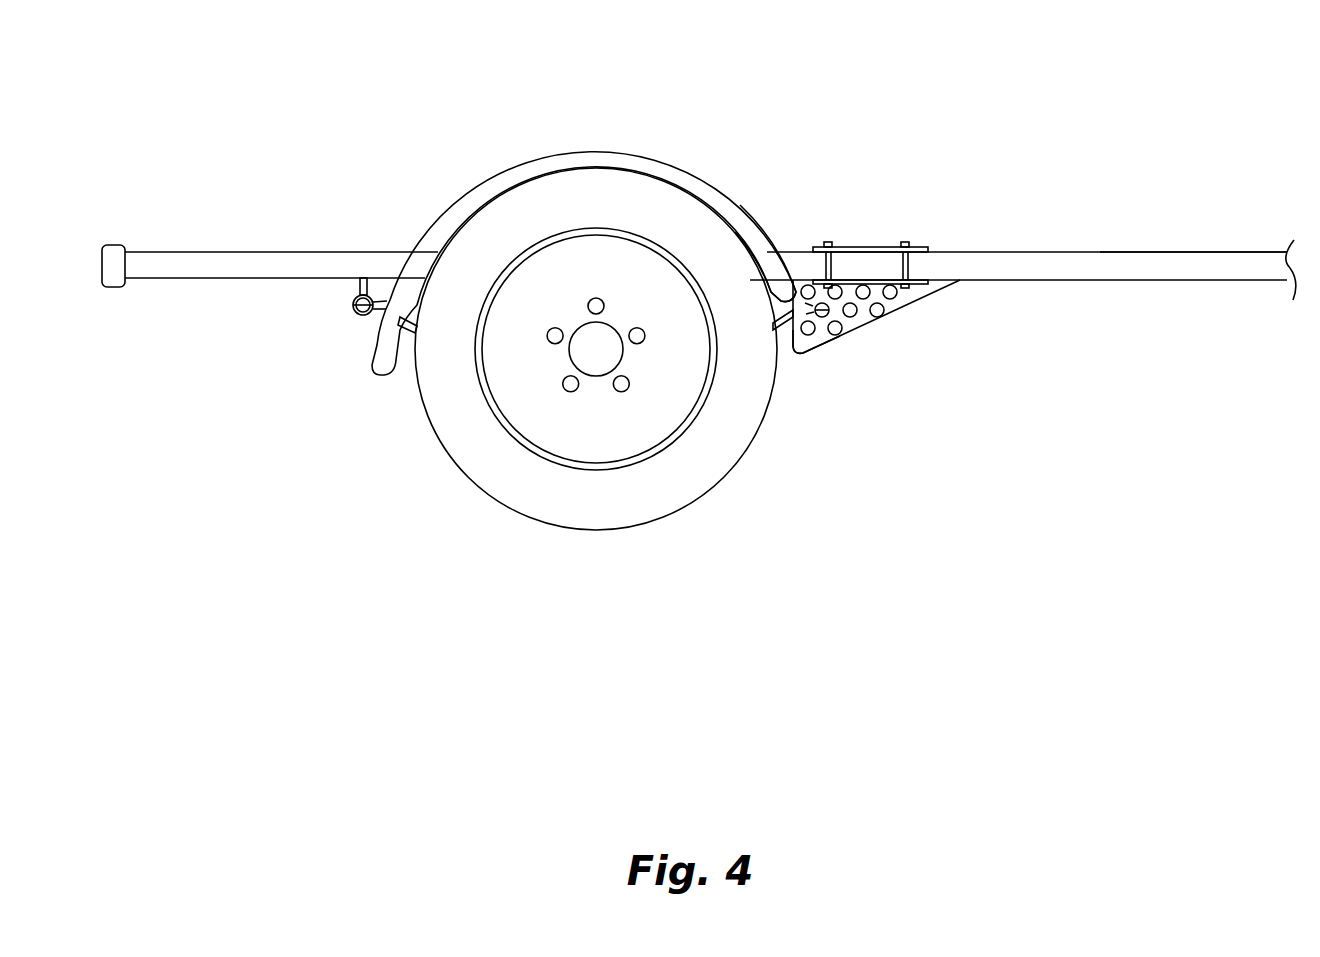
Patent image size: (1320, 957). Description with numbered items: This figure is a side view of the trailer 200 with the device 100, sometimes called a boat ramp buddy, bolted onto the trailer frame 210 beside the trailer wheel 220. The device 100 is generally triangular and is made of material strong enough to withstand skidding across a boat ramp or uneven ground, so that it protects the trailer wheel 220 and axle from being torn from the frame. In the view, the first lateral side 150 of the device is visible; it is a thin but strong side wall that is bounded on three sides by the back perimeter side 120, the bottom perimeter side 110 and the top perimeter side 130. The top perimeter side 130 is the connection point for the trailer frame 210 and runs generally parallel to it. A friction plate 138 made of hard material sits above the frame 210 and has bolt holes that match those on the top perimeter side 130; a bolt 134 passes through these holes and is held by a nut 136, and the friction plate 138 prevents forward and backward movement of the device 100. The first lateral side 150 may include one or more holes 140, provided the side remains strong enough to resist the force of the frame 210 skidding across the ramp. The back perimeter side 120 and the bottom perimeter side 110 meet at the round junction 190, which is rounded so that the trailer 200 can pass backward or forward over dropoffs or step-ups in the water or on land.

The device 100 is at (1023, 310).
The bottom perimeter side 110 is at (937, 294).
The back perimeter side 120 is at (786, 286).
The top perimeter side 130 is at (950, 276).
The bolt 134 is at (903, 265).
The nut 136 is at (907, 242).
The friction plate 138 is at (845, 246).
The hole 140 is at (844, 336).
The first lateral side 150 is at (895, 309).
The round junction 190 is at (813, 357).
The trailer 200 is at (454, 126).
The trailer frame 210 is at (215, 279).
The trailer wheel 220 is at (724, 478).